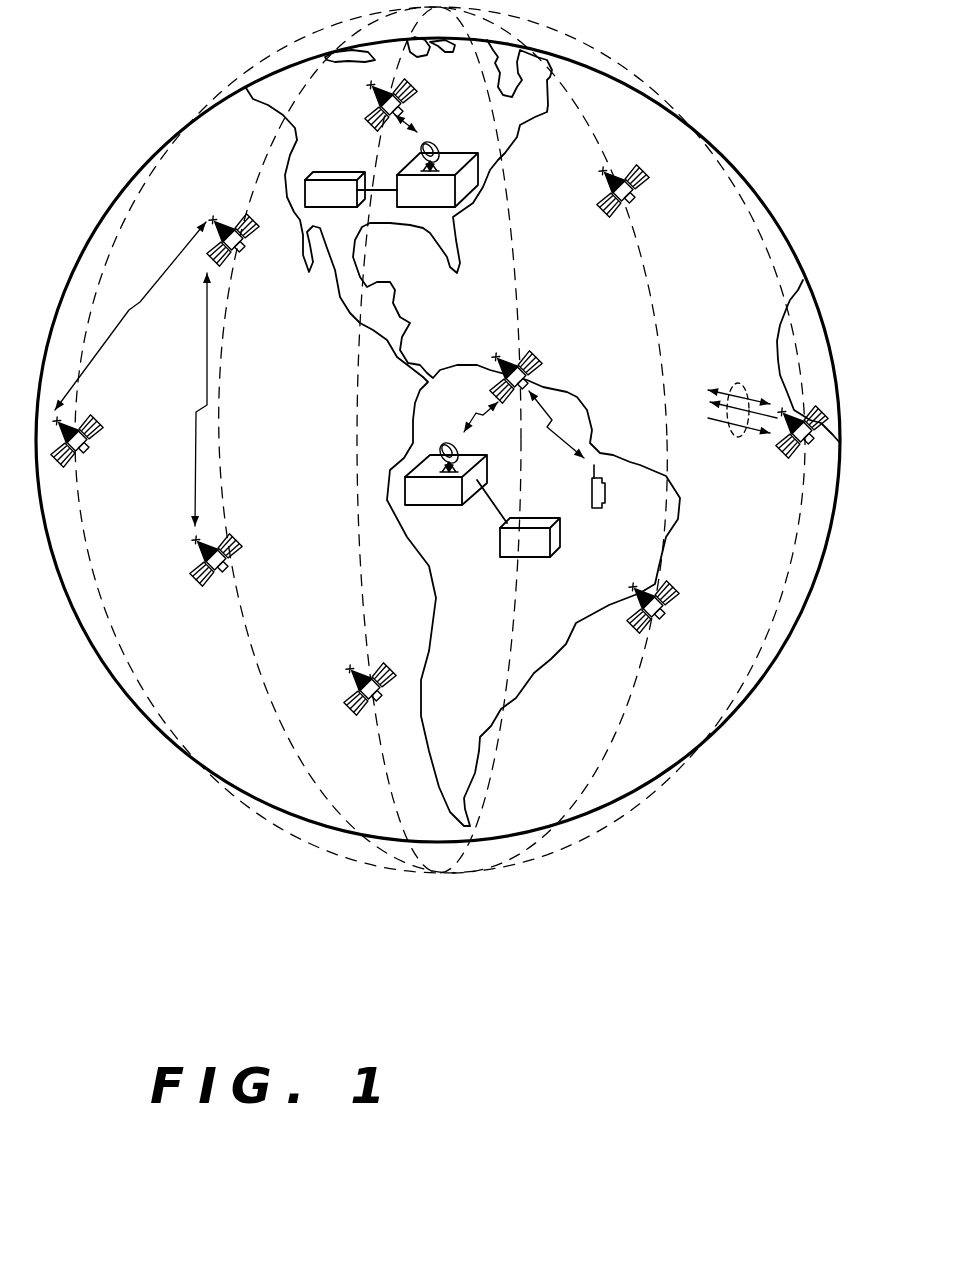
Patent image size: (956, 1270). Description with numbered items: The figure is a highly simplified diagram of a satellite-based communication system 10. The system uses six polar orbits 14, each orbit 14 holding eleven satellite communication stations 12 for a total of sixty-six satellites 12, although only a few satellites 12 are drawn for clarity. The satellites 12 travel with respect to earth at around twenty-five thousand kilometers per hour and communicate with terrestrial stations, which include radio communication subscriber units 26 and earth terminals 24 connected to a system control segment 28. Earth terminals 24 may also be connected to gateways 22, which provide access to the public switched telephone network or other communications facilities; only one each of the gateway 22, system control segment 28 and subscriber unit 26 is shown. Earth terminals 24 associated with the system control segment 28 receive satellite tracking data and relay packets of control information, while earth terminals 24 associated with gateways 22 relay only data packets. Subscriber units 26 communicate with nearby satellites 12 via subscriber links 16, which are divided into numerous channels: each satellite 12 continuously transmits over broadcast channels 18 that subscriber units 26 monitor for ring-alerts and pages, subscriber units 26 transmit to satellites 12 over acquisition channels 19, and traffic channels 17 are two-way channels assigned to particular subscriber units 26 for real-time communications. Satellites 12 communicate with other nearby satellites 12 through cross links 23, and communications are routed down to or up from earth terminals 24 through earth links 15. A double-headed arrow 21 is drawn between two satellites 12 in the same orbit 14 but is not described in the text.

The satellite-based communication system 10 is at (435, 968).
The satellite communication station 12 is at (368, 128).
The polar orbit 14 is at (256, 165).
The earth link 15 is at (473, 408).
The subscriber link 16 is at (553, 410).
The traffic channel 17 is at (730, 386).
The broadcast channel 18 is at (713, 401).
The acquisition channel 19 is at (722, 427).
The in-plane cross-link between satellites 21 is at (194, 445).
The gateway 22 is at (537, 557).
The cross link 23 is at (143, 304).
The earth terminal 24 is at (459, 153).
The subscriber unit 26 is at (597, 510).
The system control segment 28 is at (310, 207).